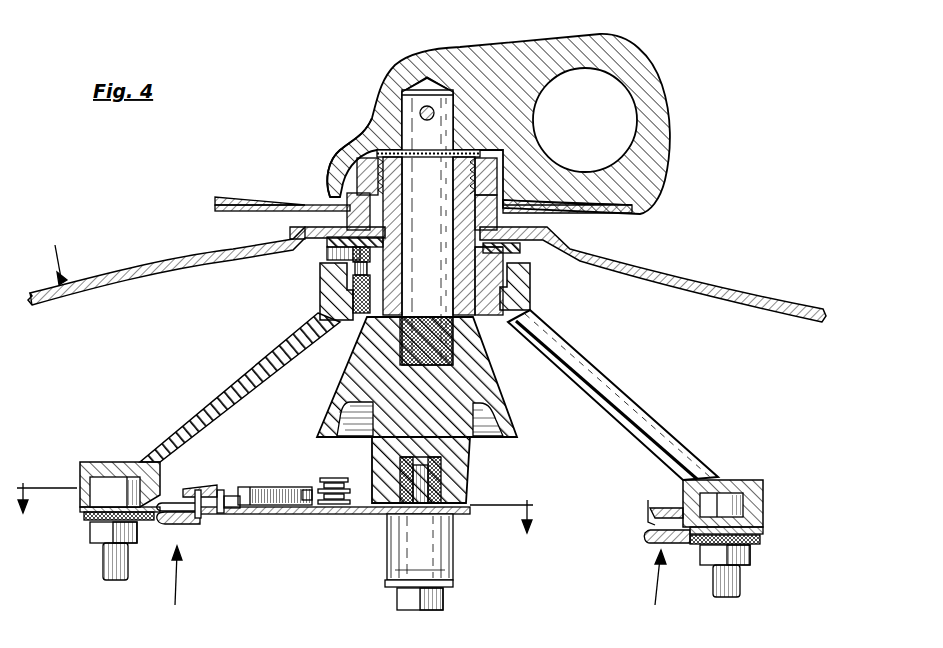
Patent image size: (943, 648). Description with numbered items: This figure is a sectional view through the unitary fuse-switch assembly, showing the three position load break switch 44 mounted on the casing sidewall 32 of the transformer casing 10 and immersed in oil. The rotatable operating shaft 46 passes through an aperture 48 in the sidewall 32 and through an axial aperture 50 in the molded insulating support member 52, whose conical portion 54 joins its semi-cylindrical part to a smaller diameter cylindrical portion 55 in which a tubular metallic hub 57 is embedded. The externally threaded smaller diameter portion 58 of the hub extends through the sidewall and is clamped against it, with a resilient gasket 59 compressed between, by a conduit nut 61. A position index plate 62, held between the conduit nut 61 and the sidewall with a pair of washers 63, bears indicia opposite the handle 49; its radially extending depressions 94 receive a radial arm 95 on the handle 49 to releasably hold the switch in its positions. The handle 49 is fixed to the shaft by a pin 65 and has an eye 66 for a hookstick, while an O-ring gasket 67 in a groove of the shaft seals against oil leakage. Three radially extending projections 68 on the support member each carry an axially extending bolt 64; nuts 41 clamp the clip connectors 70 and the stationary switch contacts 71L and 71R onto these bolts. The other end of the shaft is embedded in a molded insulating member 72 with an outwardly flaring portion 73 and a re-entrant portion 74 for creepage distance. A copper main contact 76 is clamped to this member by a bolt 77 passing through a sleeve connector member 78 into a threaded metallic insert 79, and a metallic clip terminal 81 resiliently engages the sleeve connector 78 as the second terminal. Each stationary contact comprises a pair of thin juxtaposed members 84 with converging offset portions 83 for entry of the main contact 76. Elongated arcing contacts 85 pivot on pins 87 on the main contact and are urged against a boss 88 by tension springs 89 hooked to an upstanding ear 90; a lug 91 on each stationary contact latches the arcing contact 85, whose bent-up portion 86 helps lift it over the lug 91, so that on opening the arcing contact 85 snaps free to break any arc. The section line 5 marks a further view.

The casing 10 is at (53, 253).
The casing sidewall 32 is at (120, 272).
The nut 41 is at (103, 532).
The three position load break switch 44 is at (93, 327).
The rotatable operating shaft 46 is at (426, 323).
The aperture 48 is at (378, 237).
The handle 49 is at (490, 65).
The axial aperture 50 is at (458, 280).
The molded insulating support member 52 is at (650, 412).
The conical portion 54 is at (216, 392).
The smaller diameter cylindrical portion 55 is at (320, 290).
The tubular metallic hub 57 is at (531, 283).
The externally threaded smaller diameter portion 58 is at (480, 165).
The resilient gasket 59 is at (335, 250).
The conduit nut 61 is at (362, 162).
The position index plate 62 is at (297, 204).
The washers 63 is at (336, 180).
The axially extending bolt 64 is at (115, 580).
The pin 65 is at (422, 112).
The eye 66 is at (625, 108).
The resilient O-ring gasket 67 is at (403, 218).
The radially extending projections 68 is at (90, 460).
The clip connectors 70 is at (85, 520).
The stationary switch contact (left) 71L is at (177, 589).
The stationary switch contact (right) 71R is at (661, 591).
The molded insulating member 72 is at (375, 378).
The outwardly flaring portion 73 is at (515, 435).
The re-entrant portion 74 is at (347, 403).
The main contact 76 is at (281, 514).
The bolt 77 is at (408, 598).
The sleeve connector member 78 is at (420, 548).
The metallic insert 79 is at (441, 470).
The metallic clip terminal 81 is at (385, 553).
The offset portions 83 is at (172, 502).
The thin juxtaposed members 84 is at (83, 510).
The arcing contacts 85 is at (228, 514).
The bent-up portion 86 is at (197, 490).
The pins 87 is at (337, 480).
The boss 88 is at (220, 490).
The tension springs 89 is at (278, 487).
The upstanding ear 90 is at (310, 489).
The lug 91 is at (202, 520).
The radially extending depressions 94 is at (233, 197).
The radial arm 95 is at (640, 206).
The section line 5- 5 is at (275, 495).